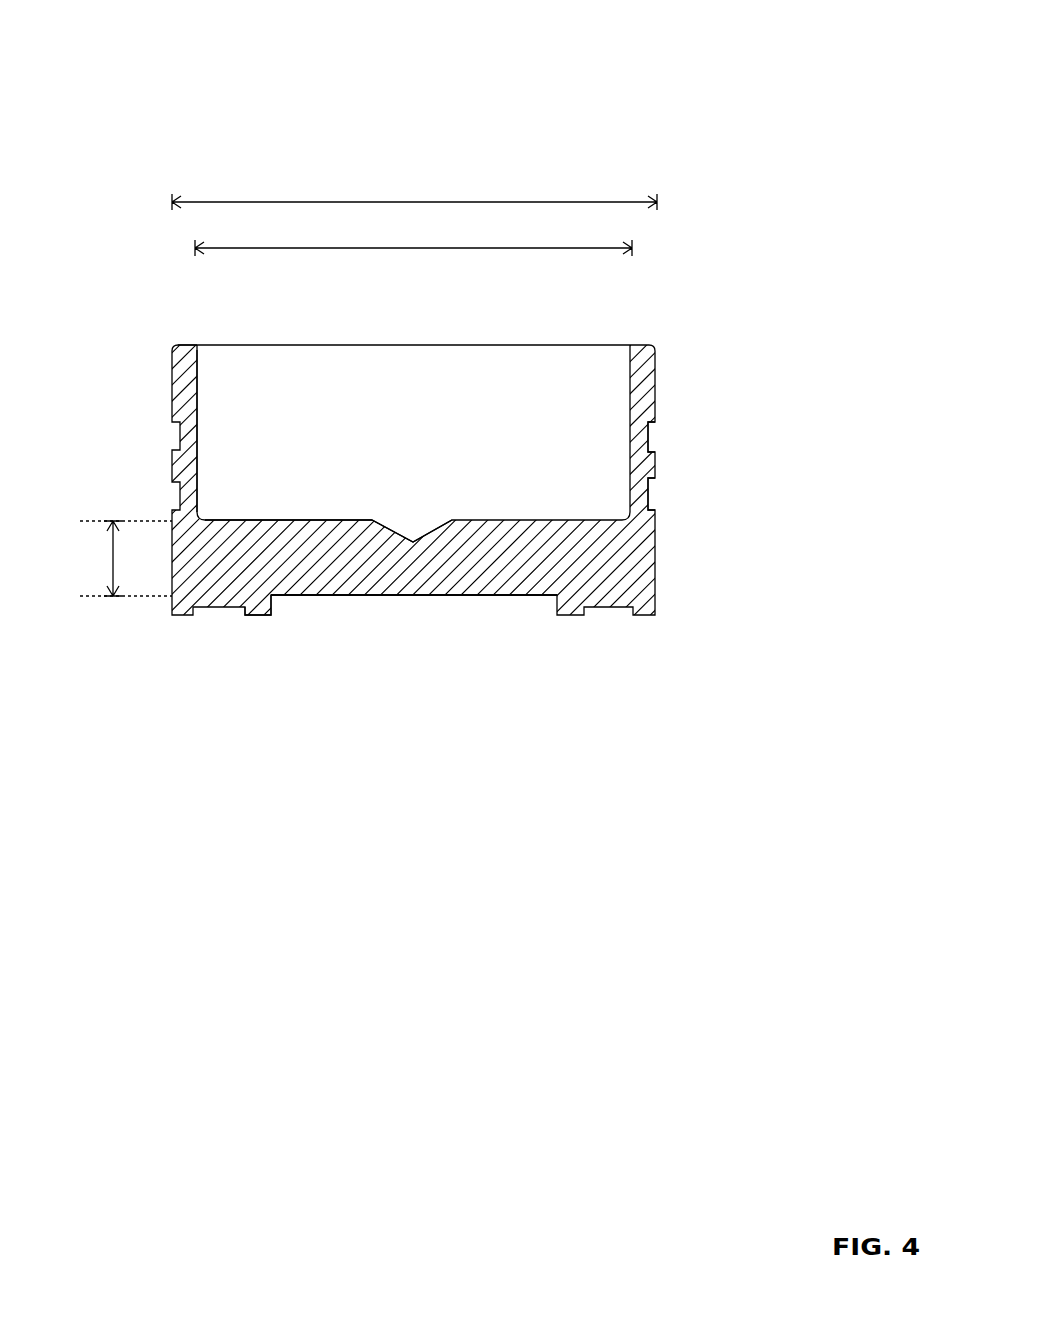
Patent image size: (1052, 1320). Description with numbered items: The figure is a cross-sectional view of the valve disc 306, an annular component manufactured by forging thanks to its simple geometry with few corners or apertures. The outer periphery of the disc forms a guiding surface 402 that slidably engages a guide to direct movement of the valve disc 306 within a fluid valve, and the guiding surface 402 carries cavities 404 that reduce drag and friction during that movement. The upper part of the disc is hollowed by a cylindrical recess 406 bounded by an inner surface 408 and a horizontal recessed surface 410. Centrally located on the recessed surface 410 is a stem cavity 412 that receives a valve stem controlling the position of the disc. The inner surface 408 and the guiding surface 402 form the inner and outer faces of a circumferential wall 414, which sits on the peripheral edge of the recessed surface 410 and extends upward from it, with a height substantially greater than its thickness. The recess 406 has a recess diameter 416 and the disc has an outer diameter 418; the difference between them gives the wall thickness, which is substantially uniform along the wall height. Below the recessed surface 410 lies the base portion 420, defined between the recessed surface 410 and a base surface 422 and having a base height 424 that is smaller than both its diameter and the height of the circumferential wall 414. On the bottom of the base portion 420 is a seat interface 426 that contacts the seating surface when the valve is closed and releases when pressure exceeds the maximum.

The valve disc 306 is at (750, 70).
The guiding surface 402 is at (172, 392).
The cavities 404 is at (649, 437).
The recess 406 is at (408, 320).
The inner surface 408 is at (197, 418).
The recessed surface 410 is at (255, 520).
The stem cavity 412 is at (428, 530).
The circumferential wall 414 is at (192, 346).
The recess diameter 416 is at (225, 248).
The outer diameter 418 is at (622, 202).
The base portion 420 is at (598, 562).
The base surface 422 is at (455, 597).
The base height 424 is at (113, 562).
The seat interface 426 is at (260, 616).